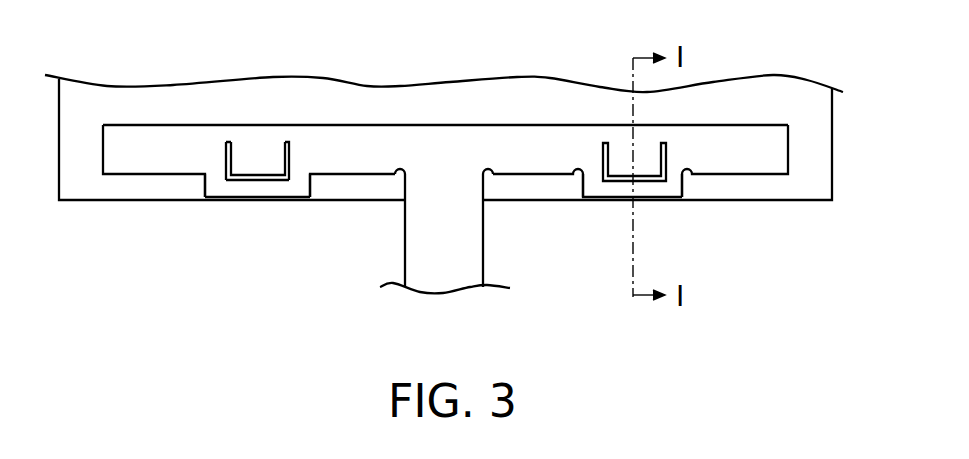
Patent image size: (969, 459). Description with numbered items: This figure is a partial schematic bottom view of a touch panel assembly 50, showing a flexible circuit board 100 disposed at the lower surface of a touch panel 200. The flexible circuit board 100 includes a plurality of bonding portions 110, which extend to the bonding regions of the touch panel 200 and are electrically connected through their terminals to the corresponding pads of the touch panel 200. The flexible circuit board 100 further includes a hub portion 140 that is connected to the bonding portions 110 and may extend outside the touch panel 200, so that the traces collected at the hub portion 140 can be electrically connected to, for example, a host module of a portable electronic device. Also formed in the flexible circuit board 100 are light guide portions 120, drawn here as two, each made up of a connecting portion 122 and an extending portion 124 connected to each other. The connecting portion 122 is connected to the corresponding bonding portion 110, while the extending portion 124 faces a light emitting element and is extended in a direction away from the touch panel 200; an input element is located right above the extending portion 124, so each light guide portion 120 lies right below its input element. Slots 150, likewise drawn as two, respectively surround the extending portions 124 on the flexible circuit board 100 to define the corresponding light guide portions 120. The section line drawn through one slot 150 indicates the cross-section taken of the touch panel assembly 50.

The touch panel assembly 50 is at (855, 356).
The flexible circuit board 100 is at (445, 125).
The bonding portion 110 is at (140, 148).
The light guide portion 120 is at (443, 149).
The connecting portion 122 is at (263, 140).
The extending portion 124 is at (258, 165).
The hub portion 140 is at (453, 250).
The slot 150 is at (227, 155).
The touch panel 200 is at (806, 117).